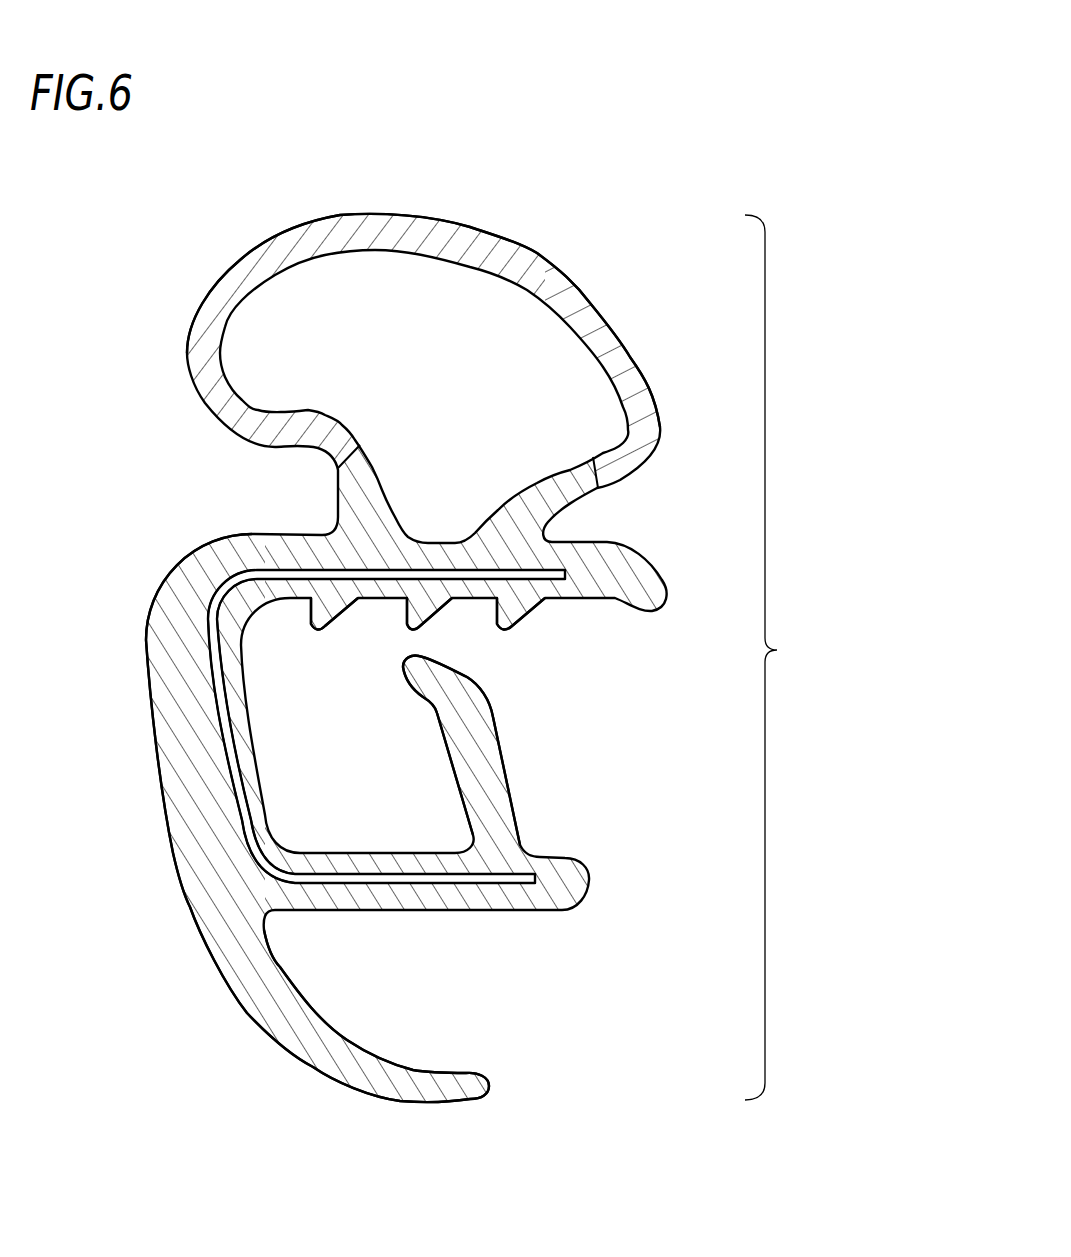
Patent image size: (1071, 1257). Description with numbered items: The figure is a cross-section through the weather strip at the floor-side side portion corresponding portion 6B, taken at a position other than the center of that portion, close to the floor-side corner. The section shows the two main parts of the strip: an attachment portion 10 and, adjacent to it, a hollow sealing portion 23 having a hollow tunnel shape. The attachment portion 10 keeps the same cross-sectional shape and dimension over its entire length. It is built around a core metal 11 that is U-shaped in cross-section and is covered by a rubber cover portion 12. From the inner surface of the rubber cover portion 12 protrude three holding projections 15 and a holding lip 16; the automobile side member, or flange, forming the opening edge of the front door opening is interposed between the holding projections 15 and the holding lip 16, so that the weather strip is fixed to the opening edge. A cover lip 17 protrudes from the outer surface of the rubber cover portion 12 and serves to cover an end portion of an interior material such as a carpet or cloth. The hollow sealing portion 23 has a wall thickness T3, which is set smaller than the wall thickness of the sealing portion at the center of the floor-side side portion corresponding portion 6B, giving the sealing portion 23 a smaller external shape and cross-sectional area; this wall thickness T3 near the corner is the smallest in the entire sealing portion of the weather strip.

The attachment portion 10 is at (144, 607).
The core metal 11 is at (223, 720).
The rubber cover portion 12 is at (192, 812).
The holding projections 15 is at (328, 627).
The holding lip 16 is at (480, 767).
The cover lip 17 is at (393, 1067).
The hollow sealing portion 23 is at (327, 228).
The wall thickness of the sealing portion T3 is at (415, 307).
The floor-side side portion corresponding portion 6B is at (847, 657).